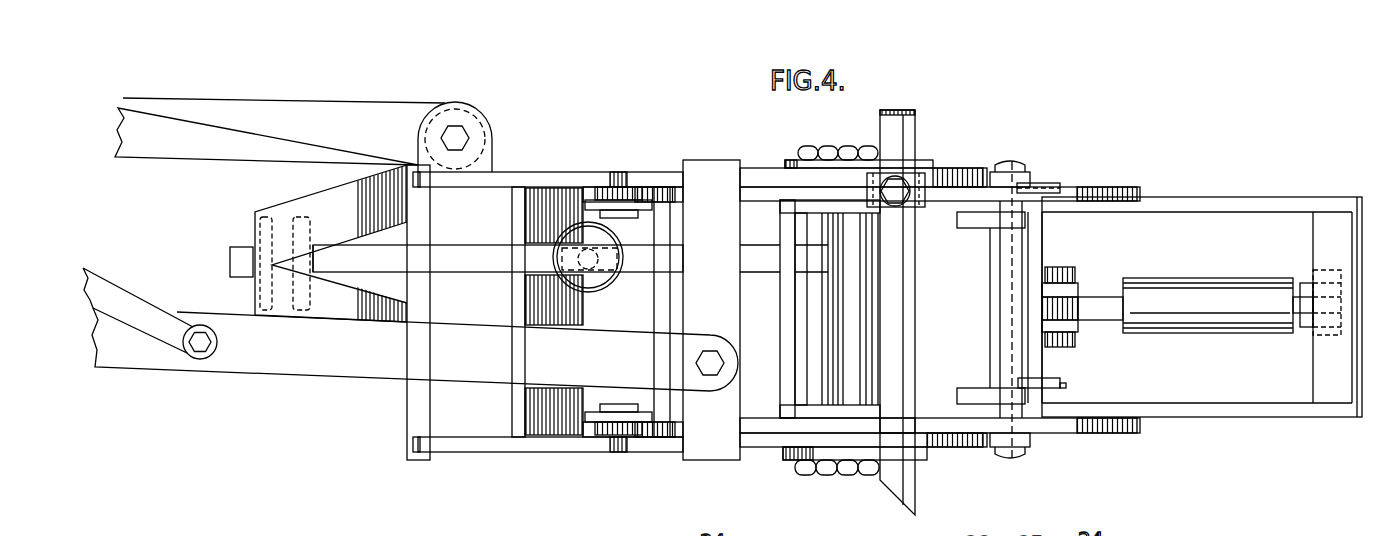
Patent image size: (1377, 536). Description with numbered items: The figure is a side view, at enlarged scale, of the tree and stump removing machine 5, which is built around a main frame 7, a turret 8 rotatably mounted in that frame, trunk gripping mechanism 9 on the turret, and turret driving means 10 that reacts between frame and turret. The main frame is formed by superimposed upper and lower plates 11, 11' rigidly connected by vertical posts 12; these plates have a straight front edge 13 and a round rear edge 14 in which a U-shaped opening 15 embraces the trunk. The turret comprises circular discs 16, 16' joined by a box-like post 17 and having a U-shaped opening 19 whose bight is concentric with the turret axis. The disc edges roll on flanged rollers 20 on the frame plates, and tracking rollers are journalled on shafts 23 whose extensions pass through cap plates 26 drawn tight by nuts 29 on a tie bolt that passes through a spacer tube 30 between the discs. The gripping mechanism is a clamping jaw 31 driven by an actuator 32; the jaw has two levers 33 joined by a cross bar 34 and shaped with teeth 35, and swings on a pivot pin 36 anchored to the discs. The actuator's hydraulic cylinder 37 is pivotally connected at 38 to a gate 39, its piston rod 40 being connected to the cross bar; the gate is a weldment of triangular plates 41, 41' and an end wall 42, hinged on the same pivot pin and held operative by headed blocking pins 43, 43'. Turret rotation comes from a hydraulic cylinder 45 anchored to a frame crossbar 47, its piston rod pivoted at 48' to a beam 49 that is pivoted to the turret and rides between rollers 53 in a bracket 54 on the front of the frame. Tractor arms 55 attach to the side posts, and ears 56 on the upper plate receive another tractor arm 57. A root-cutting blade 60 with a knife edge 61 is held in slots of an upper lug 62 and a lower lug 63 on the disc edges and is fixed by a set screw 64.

The machine 5 is at (984, 123).
The main frame 7 is at (525, 172).
The turret 8 is at (1095, 184).
The trunk gripping mechanism 9 is at (1250, 197).
The turret driving means 10 is at (606, 292).
The upper plate 11 is at (550, 150).
The lower plate 11' is at (550, 468).
The vertical struts or posts 12 is at (718, 294).
The straight front edge 13 is at (410, 175).
The round rear edge 14 is at (985, 168).
The U-shaped opening 15 is at (817, 175).
The upper circular disc 16 is at (1125, 164).
The lower circular disc 16' is at (1113, 447).
The box-like post 17 is at (790, 325).
The U-shaped opening 19 is at (815, 467).
The flanged rollers 20 is at (617, 205).
The shafts 23 is at (815, 286).
The cap plates 26 is at (782, 163).
The nuts 29 is at (856, 146).
The spacer tube 30 is at (855, 282).
The clamping jaw 31 is at (997, 345).
The actuator 32 is at (1204, 290).
The levers 33 is at (990, 250).
The cross bar 34 is at (1030, 252).
The teeth 35 is at (957, 220).
The pivot pin 36 is at (1000, 298).
The hydraulic cylinder 37 is at (1245, 300).
The pivotal connection 38 is at (1318, 265).
The gate 39 is at (1316, 182).
The piston rod 40 is at (1105, 314).
The upper triangular plate 41 is at (1197, 181).
The lower triangular plate 41' is at (1197, 439).
The end wall 42 is at (1340, 234).
The upper blocking pin 43 is at (1055, 166).
The lower blocking pin 43' is at (1075, 377).
The hydraulic cylinder 45 is at (562, 290).
The crossbar 47 is at (543, 212).
The pivotal connection 48' is at (618, 259).
The beam 49 is at (445, 253).
The rollers 53 is at (255, 233).
The bracket 54 is at (250, 285).
The arms 55 is at (320, 355).
The ears 56 is at (448, 112).
The arm 57 is at (250, 118).
The blade 60 is at (893, 484).
The knife edge 61 is at (916, 487).
The upper lug 62 is at (926, 183).
The lower lug 63 is at (890, 420).
The set screw 64 is at (895, 176).